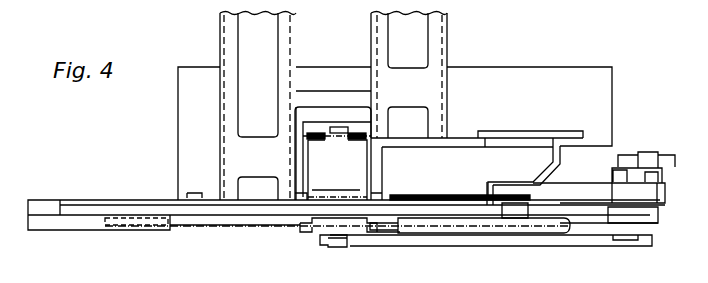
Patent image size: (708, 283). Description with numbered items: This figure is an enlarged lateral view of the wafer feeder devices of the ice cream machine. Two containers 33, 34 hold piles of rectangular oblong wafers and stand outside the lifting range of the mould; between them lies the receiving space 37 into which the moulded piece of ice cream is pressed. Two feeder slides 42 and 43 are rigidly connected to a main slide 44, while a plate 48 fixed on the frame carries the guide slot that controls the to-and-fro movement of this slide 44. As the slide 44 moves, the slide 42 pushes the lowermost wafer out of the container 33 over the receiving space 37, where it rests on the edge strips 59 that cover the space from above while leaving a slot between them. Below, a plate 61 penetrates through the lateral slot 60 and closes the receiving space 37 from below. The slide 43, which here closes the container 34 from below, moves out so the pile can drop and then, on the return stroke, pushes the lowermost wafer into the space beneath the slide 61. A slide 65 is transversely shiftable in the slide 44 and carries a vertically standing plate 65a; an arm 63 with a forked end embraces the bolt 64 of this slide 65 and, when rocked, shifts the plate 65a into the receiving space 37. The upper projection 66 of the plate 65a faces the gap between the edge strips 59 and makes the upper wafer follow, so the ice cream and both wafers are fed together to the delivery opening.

The container 33 is at (438, 52).
The container 34 is at (232, 47).
The receiving space 37 is at (333, 153).
The slide 42 is at (513, 135).
The slide 43 is at (257, 200).
The slide 44 is at (597, 226).
The plate 48 is at (575, 190).
The edge strips 59 is at (322, 141).
The lateral slot 60 is at (380, 195).
The plate 61 is at (432, 196).
The arm 63 is at (397, 235).
The bolt 64 is at (337, 247).
The slide 65 is at (308, 233).
The plate 65a is at (317, 178).
The upper projection 66 is at (340, 127).